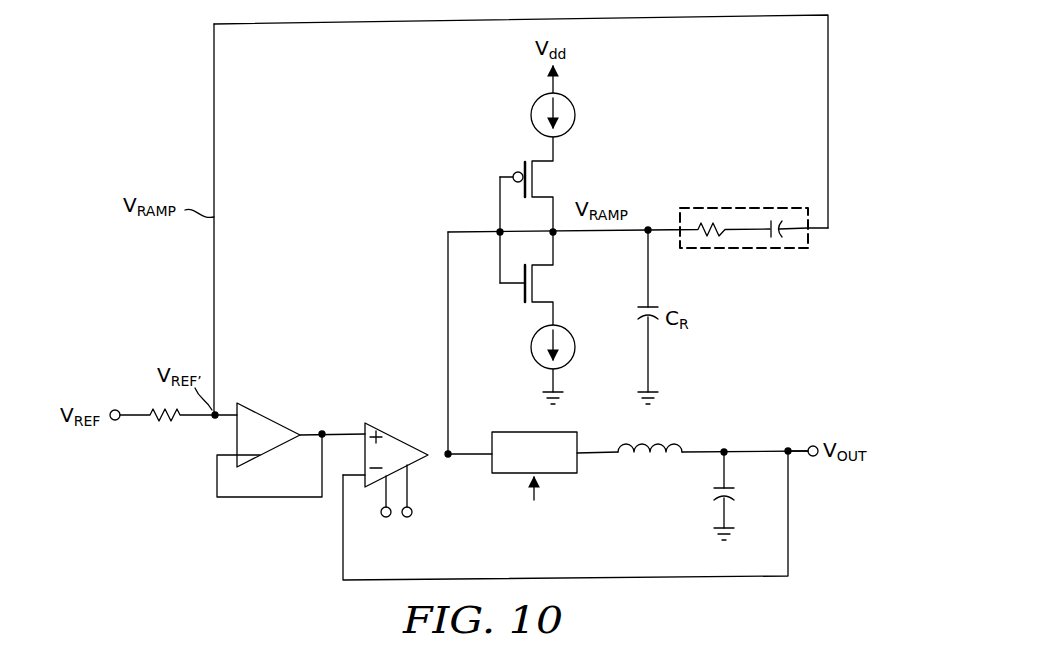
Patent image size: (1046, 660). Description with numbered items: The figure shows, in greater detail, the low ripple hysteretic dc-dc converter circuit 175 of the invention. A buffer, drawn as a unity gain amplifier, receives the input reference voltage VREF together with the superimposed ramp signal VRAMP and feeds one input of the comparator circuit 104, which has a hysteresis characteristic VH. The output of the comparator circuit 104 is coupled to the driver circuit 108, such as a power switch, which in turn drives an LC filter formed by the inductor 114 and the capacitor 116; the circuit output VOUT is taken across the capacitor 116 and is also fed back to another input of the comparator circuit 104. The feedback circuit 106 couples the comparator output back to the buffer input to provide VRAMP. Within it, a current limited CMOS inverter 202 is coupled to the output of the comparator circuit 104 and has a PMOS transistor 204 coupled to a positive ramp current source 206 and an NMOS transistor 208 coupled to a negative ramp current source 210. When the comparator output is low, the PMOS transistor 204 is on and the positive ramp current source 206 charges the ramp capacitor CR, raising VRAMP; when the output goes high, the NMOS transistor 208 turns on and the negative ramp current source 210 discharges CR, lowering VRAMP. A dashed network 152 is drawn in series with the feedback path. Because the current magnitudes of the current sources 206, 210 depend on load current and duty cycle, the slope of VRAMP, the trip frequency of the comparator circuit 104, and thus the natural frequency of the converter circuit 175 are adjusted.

The comparator circuit 104 is at (398, 432).
The feedback circuit 106 is at (842, 68).
The driver circuit 108 is at (560, 475).
The inductor 114 is at (683, 443).
The capacitor 116 is at (712, 492).
The RC network 152 is at (742, 207).
The converter circuit 175 is at (871, 163).
The current limited CMOS inverter 202 is at (519, 231).
The PMOS transistor 204 is at (521, 168).
The positive ramp current source 206 is at (576, 113).
The NMOS transistor 208 is at (522, 297).
The negative ramp current source 210 is at (570, 366).